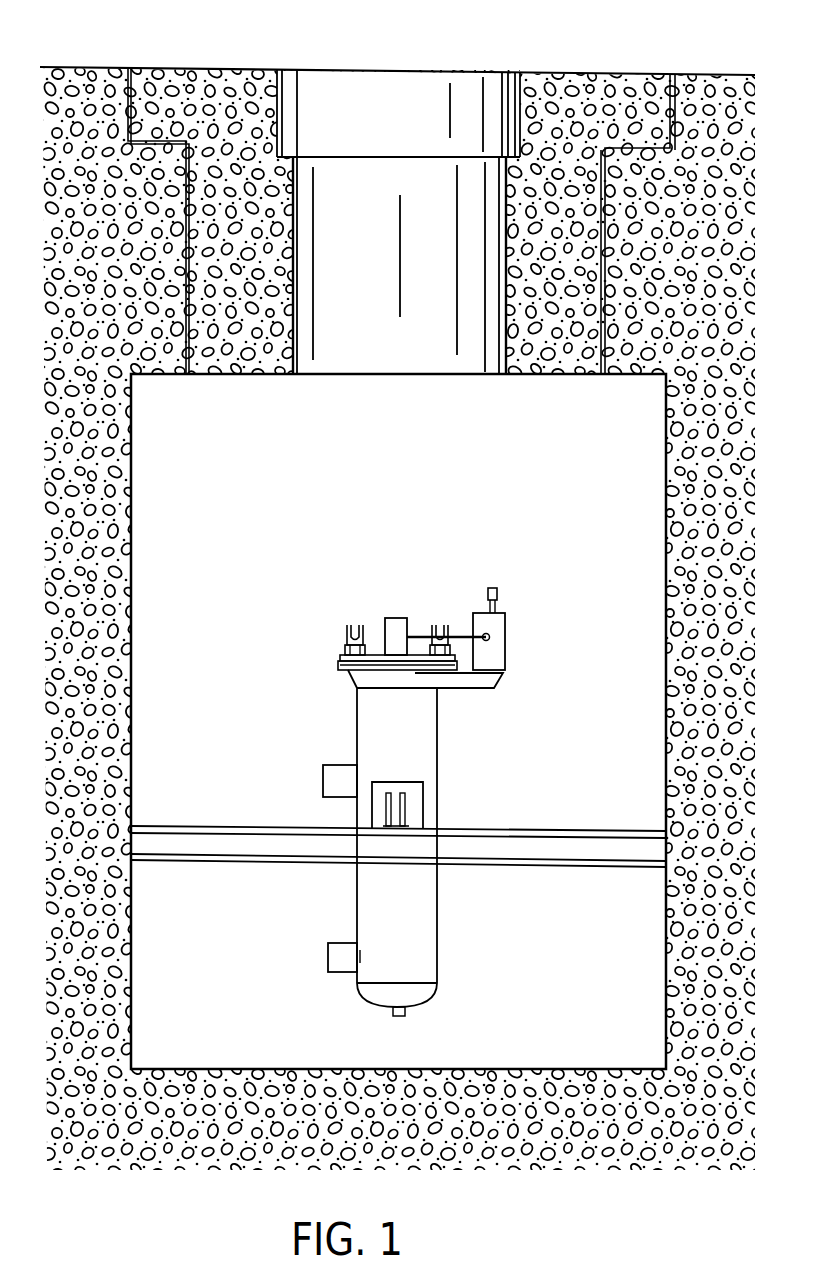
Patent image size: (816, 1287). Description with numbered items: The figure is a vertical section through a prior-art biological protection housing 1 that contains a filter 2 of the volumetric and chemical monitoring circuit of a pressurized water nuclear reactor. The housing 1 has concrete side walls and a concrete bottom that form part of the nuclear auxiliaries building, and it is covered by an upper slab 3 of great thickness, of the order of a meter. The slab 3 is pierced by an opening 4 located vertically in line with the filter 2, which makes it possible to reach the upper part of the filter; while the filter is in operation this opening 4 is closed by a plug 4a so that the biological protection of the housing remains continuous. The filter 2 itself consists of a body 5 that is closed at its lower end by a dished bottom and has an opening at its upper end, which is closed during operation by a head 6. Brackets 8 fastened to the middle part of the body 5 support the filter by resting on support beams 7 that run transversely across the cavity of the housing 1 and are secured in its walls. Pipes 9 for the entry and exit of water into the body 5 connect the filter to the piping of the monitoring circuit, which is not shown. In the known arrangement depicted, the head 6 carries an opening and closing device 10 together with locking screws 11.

The biological protection housing 1 is at (258, 517).
The filter 2 is at (414, 795).
The upper slab 3 is at (596, 113).
The opening 4 is at (523, 113).
The plug 4a is at (339, 88).
The filter body 5 is at (368, 723).
The head 6 is at (340, 657).
The support beams 7 is at (555, 867).
The brackets 8 is at (407, 818).
The pipes for the entry and exit of water 9 is at (332, 798).
The opening and closing device 10 is at (497, 657).
The locking screws 11 is at (345, 635).